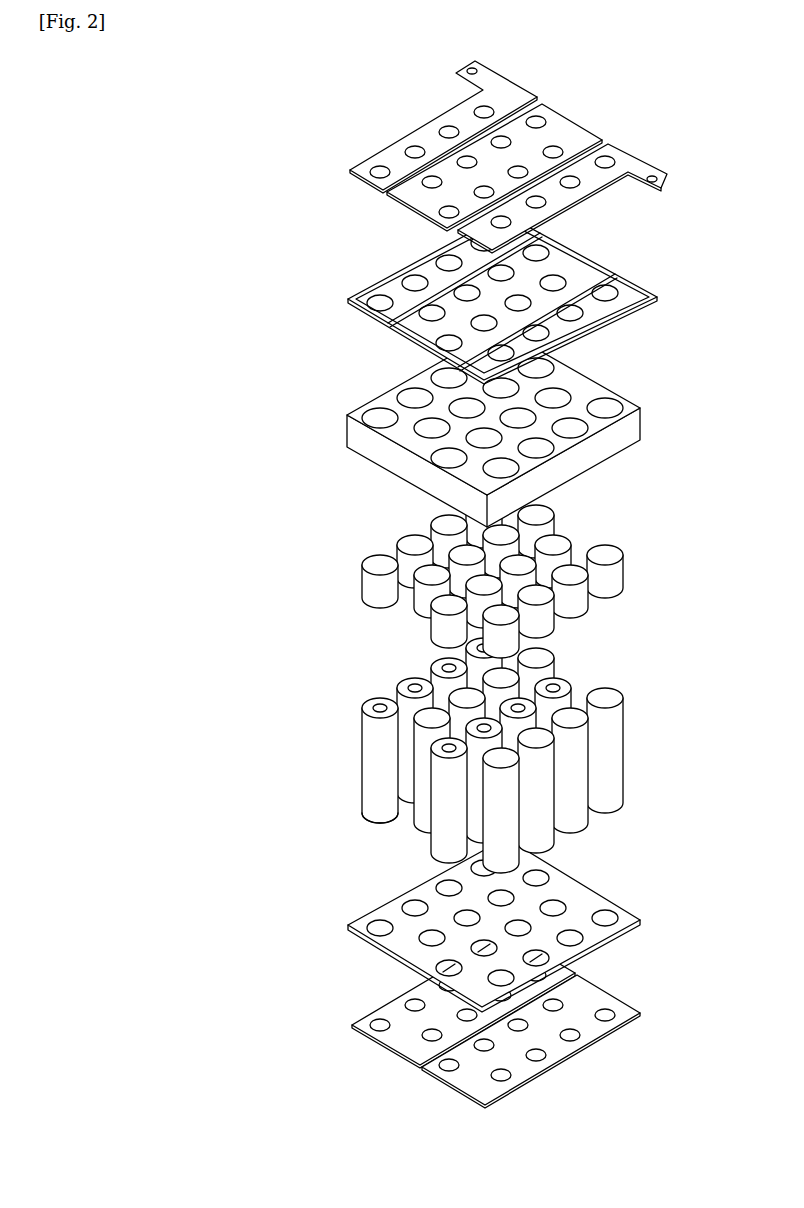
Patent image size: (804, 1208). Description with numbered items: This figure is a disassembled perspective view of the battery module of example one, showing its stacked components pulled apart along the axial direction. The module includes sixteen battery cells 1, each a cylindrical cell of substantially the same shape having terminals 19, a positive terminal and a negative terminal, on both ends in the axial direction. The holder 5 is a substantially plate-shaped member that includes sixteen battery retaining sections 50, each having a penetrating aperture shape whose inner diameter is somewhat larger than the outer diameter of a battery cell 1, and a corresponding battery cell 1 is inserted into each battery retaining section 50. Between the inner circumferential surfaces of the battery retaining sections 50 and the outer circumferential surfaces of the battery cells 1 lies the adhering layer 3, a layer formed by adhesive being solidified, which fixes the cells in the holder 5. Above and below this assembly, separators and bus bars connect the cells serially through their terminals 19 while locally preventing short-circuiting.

The battery cell 1 is at (378, 706).
The adhering layer 3 is at (367, 586).
The holder 5 is at (385, 457).
The terminal 19 is at (380, 822).
The battery retaining section 50 is at (613, 400).